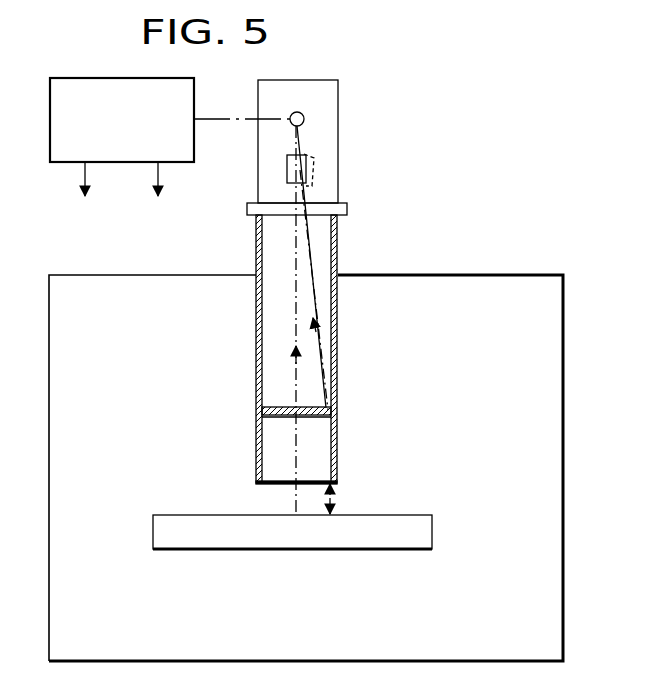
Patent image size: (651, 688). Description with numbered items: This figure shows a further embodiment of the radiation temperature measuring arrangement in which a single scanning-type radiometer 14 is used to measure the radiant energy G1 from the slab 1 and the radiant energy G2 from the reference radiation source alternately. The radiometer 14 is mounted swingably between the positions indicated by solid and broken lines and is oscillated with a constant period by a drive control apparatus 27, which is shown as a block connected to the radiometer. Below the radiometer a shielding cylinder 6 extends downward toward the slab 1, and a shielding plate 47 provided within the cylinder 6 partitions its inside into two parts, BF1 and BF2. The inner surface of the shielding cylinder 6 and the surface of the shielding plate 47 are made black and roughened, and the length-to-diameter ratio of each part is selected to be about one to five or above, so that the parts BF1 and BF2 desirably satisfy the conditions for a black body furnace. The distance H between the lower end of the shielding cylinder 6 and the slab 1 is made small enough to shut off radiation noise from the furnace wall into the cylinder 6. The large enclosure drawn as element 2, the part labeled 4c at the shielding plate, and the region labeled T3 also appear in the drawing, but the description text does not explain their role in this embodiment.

The enclosure / chamber 2 is at (49, 478).
The drive control apparatus 27 is at (50, 118).
The shielding cylinder 6 is at (338, 258).
The scanning-type radiometer 14 is at (308, 157).
The shielding plate 47 is at (262, 408).
The mirror holder / window 4c is at (283, 417).
The slab 1 is at (190, 482).
The first part of shielding cylinder BF1 is at (325, 452).
The second part of shielding cylinder BF2 is at (326, 352).
The radiant energy from the slab G1 is at (295, 328).
The radiant energy from the reference radiation source G2 is at (312, 306).
The distance between lower end of shielding cylinder and slab H is at (343, 499).
The chamber T3 is at (72, 359).